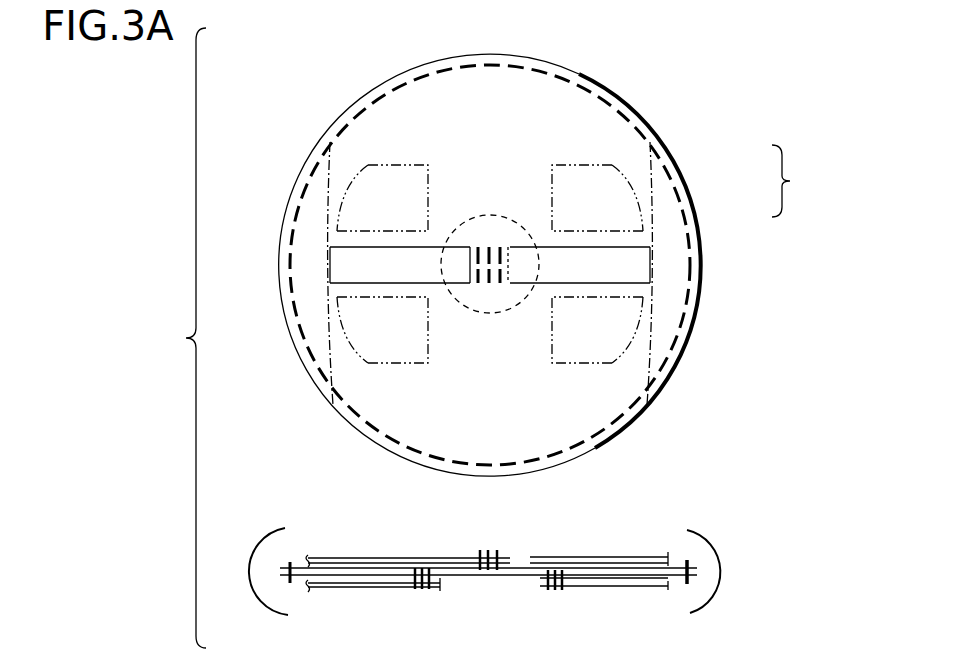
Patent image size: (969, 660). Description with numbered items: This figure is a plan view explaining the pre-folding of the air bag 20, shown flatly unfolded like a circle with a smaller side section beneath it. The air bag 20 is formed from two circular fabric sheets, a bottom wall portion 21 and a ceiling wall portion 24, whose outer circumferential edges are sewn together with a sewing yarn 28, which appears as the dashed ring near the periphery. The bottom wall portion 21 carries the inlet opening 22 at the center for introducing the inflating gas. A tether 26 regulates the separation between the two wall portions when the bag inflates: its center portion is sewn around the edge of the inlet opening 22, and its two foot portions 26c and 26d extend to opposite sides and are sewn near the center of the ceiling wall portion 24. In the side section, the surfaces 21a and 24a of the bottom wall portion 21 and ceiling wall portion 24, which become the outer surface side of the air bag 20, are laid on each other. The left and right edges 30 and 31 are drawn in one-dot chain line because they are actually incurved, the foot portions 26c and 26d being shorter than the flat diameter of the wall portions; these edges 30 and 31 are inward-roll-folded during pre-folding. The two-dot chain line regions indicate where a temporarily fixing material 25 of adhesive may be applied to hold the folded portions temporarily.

The air bag 20 is at (799, 181).
The bottom wall portion 21 is at (652, 166).
The surface of the bottom wall portion 21a is at (332, 572).
The inlet opening 22 is at (492, 223).
The ceiling wall portion 24 is at (652, 210).
The surface of the ceiling wall portion 24a is at (672, 560).
The temporarily fixing material 25 is at (390, 175).
The tether 26 is at (318, 220).
The foot portion 26c is at (347, 270).
The foot portion 26d is at (630, 268).
The sewing yarn 28 is at (573, 82).
The edge 30 is at (280, 232).
The edge 31 is at (700, 324).